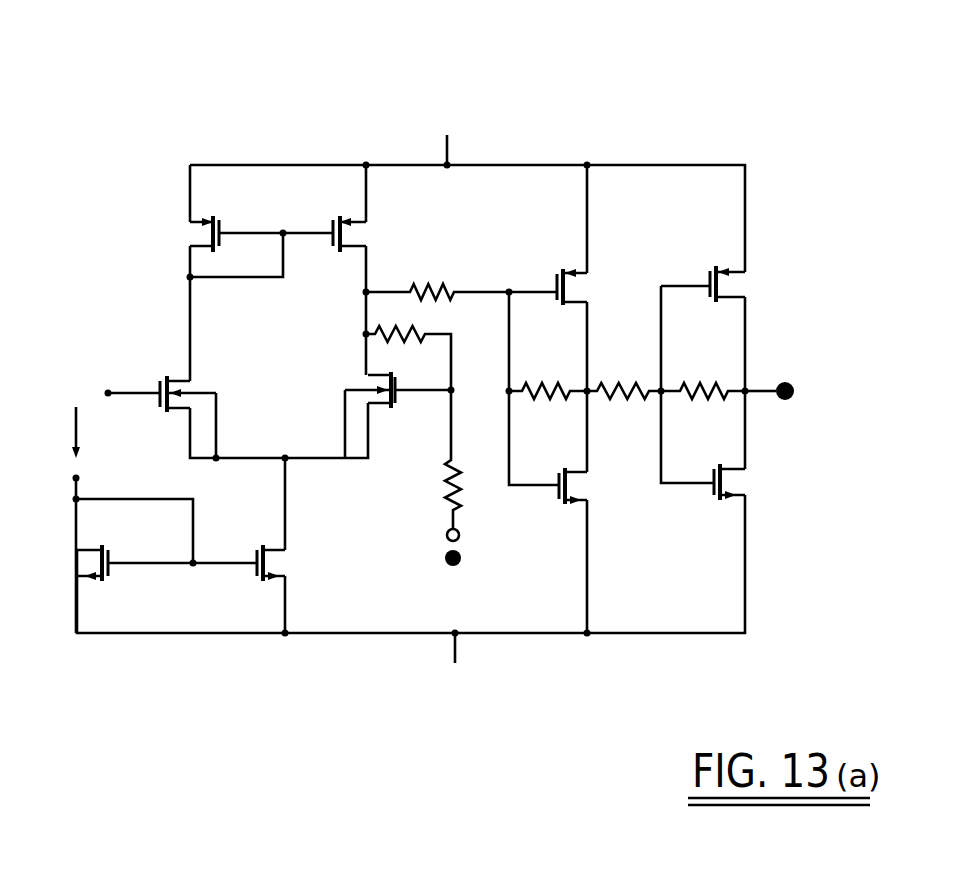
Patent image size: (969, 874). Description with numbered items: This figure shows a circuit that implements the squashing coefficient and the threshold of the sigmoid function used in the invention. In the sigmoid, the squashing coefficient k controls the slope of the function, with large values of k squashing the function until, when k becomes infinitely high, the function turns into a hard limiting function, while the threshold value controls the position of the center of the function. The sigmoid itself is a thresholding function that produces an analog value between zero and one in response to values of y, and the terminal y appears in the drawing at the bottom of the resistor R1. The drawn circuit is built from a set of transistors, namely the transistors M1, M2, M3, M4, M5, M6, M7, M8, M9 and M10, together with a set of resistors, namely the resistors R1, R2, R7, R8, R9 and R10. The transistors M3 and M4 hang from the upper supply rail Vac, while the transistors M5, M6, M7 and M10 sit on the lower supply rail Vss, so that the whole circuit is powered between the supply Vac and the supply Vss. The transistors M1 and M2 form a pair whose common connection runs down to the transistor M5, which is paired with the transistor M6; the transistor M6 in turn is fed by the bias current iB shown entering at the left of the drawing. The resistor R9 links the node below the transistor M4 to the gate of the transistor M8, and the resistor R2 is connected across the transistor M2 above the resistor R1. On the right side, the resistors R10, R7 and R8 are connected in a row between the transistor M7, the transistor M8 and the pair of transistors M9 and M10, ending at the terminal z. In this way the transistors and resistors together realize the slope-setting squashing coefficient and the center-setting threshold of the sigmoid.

The transistor M1 is at (203, 384).
The transistor M2 is at (384, 382).
The transistor M3 is at (181, 234).
The transistor M4 is at (372, 234).
The transistor M5 is at (294, 563).
The transistor M6 is at (73, 563).
The transistor M7 is at (595, 486).
The transistor M8 is at (594, 287).
The transistor M9 is at (752, 284).
The transistor M10 is at (762, 482).
The resistor R1 is at (435, 460).
The resistor R2 is at (408, 358).
The resistor R7 is at (624, 375).
The resistor R8 is at (703, 375).
The resistor R9 is at (437, 275).
The resistor R10 is at (548, 375).
The positive supply terminal Vac is at (448, 119).
The negative supply terminal Vss is at (457, 683).
The input value y is at (454, 560).
The output terminal z is at (779, 389).
The bias current iB is at (50, 476).